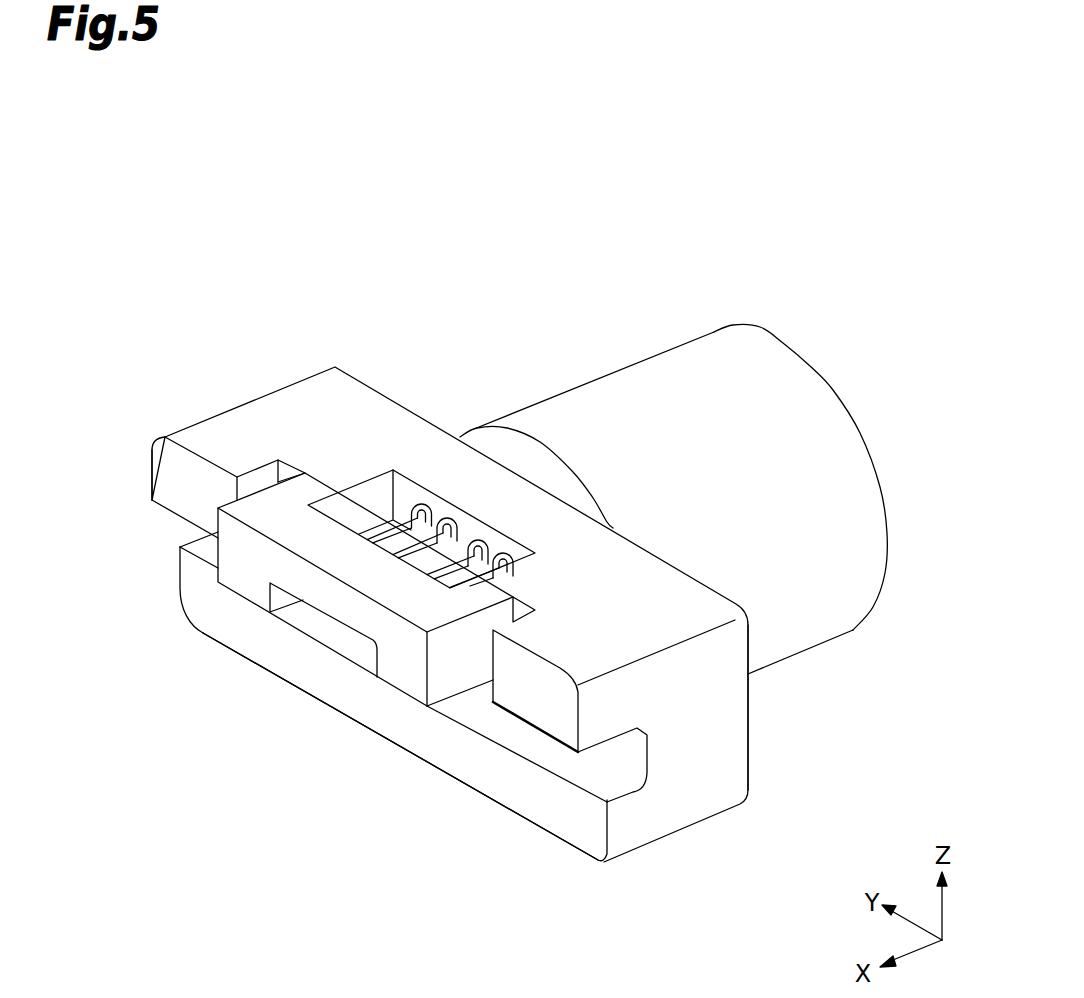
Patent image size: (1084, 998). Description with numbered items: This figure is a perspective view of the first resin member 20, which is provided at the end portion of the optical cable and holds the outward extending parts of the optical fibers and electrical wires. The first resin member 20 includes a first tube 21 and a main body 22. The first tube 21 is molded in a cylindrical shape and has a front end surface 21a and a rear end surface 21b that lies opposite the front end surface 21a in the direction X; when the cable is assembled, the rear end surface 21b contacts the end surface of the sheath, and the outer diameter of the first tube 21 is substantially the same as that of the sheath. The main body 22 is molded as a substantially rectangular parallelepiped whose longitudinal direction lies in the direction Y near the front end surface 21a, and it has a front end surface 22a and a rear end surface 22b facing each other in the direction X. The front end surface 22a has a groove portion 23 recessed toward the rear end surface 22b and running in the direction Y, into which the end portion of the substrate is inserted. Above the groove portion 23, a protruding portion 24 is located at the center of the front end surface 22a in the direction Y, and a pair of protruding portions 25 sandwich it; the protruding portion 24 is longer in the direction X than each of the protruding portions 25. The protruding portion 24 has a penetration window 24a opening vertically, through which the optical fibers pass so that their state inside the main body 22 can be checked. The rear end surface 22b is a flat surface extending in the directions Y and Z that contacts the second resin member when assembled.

The first resin member 20 is at (318, 252).
The first tube 21 is at (623, 378).
The front end surface 21a is at (510, 457).
The rear end surface 21b is at (864, 430).
The main body 22 is at (305, 388).
The front end surface 22a is at (550, 813).
The rear end surface 22b is at (752, 742).
The groove portion 23 is at (527, 743).
The protruding portion 24 is at (350, 605).
The penetration window 24a is at (353, 517).
The pair of protruding portions 25 is at (185, 491).